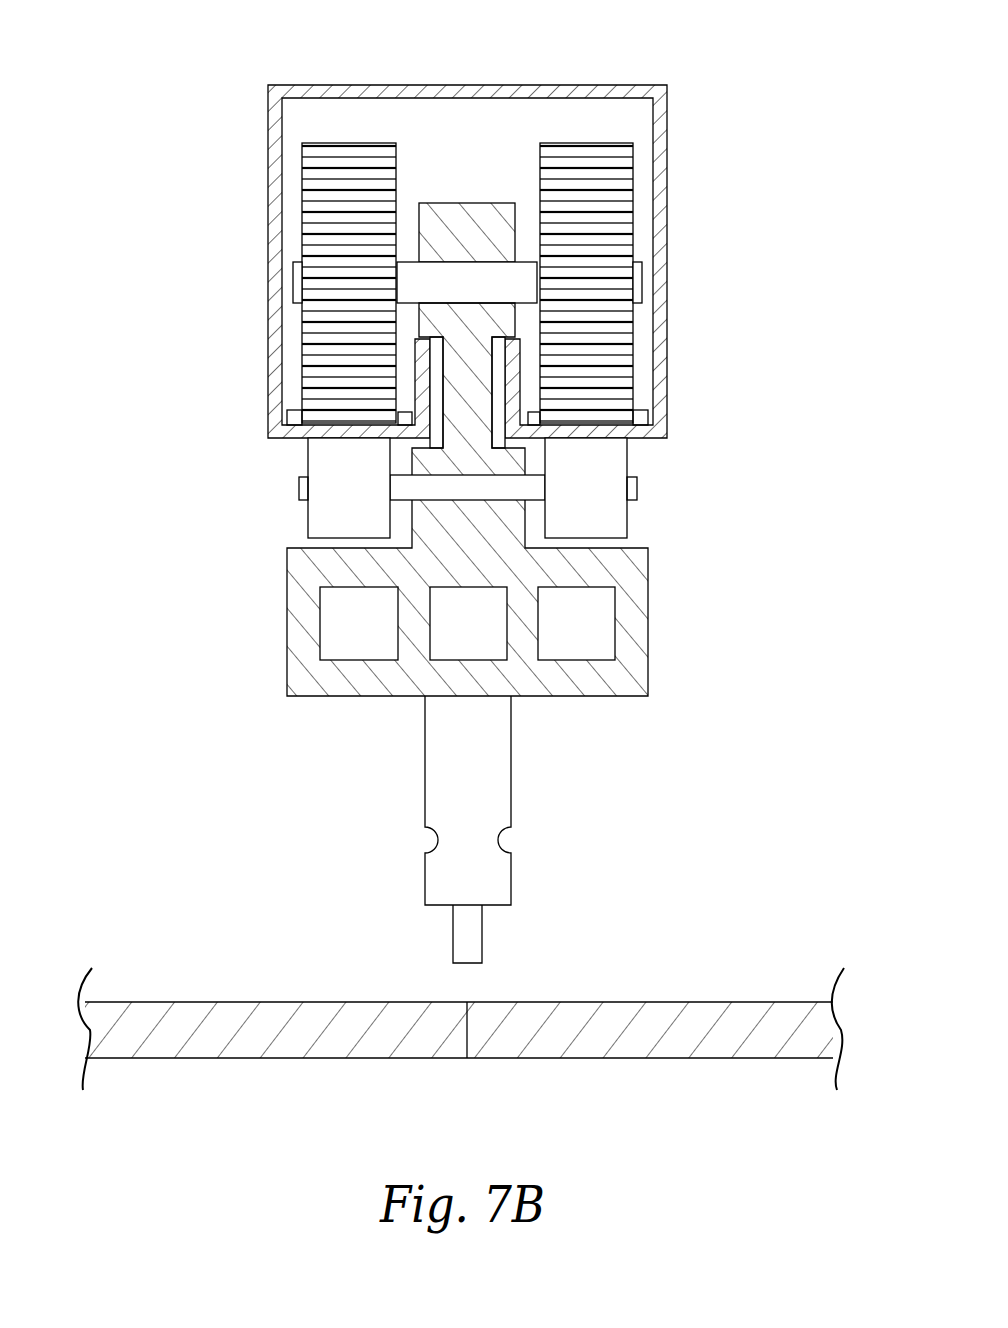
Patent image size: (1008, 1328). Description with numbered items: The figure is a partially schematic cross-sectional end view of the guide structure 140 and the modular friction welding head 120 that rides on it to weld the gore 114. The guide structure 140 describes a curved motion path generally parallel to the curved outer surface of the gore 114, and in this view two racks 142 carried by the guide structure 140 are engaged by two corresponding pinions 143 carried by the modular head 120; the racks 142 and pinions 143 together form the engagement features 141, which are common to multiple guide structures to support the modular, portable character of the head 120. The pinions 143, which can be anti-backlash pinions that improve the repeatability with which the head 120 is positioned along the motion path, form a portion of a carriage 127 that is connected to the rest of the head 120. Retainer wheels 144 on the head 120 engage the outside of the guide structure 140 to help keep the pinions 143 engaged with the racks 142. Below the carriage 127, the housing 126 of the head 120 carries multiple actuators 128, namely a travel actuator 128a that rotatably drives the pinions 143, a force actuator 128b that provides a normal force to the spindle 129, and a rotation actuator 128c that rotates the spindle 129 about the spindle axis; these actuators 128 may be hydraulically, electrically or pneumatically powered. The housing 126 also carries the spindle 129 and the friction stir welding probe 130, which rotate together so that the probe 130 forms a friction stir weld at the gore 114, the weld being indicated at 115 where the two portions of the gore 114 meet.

The gore 114 is at (293, 1002).
The seam 115 is at (467, 1058).
The modular friction welding head 120 is at (764, 566).
The housing 126 is at (648, 615).
The carriage 127 is at (178, 298).
The actuators 128 is at (261, 705).
The travel actuator 128a is at (330, 628).
The force actuator 128b is at (437, 648).
The rotation actuator 128c is at (598, 652).
The spindle 129 is at (498, 762).
The friction stir welding probe 130 is at (483, 937).
The guide structure 140 is at (497, 84).
The engagement features 141 is at (697, 342).
The racks 142 is at (290, 410).
The pinions 143 is at (325, 165).
The retainer wheels 144 is at (317, 515).